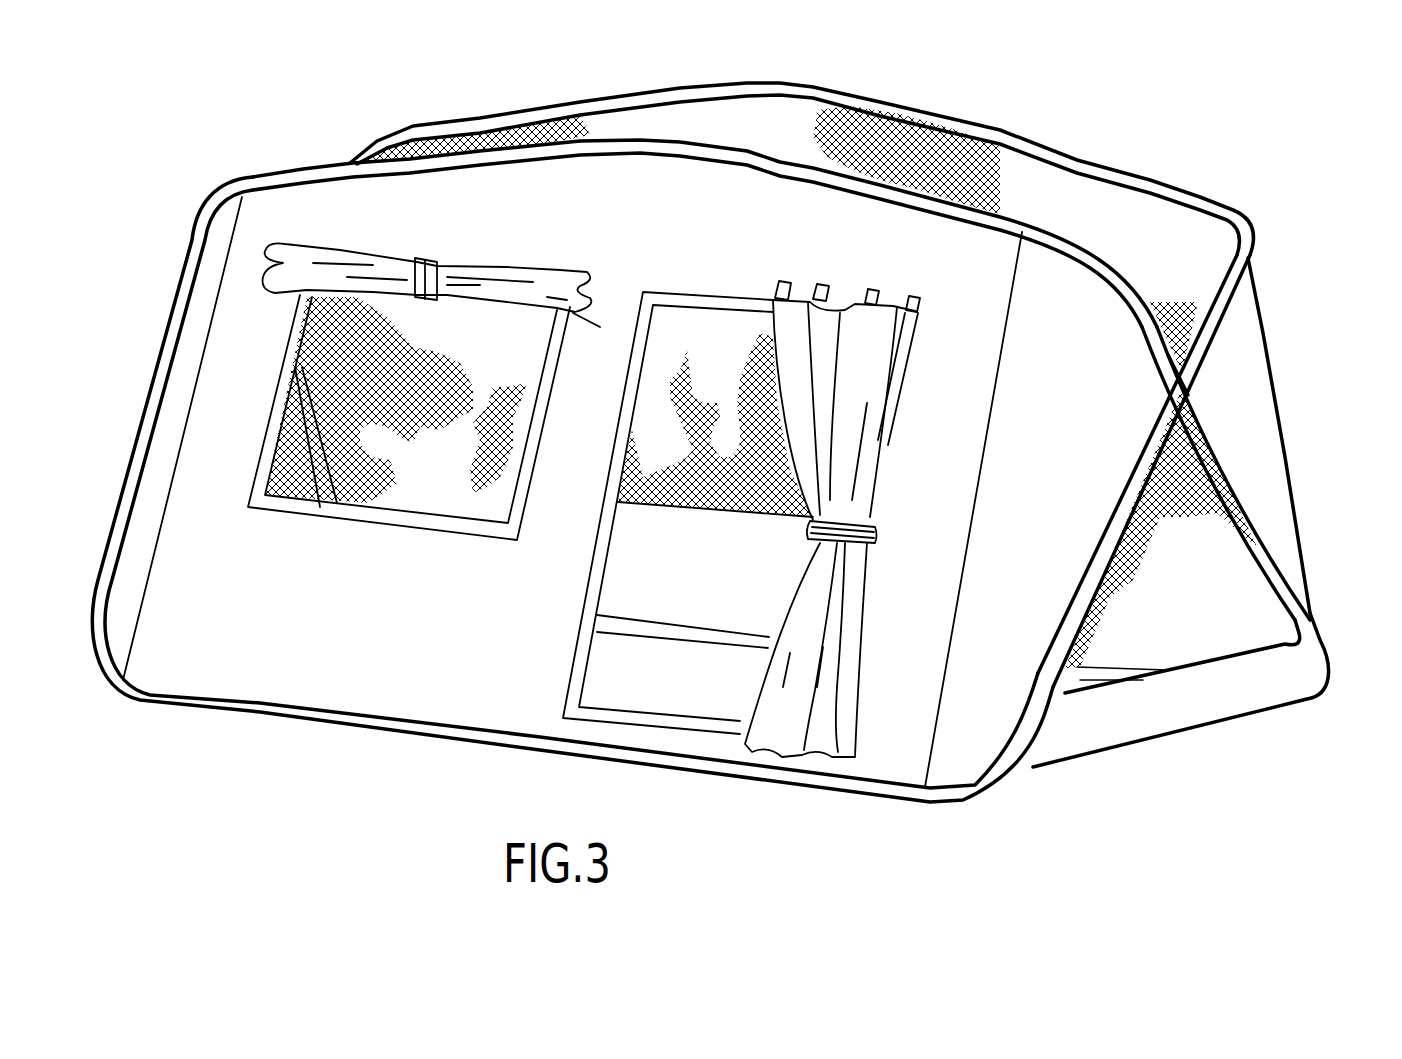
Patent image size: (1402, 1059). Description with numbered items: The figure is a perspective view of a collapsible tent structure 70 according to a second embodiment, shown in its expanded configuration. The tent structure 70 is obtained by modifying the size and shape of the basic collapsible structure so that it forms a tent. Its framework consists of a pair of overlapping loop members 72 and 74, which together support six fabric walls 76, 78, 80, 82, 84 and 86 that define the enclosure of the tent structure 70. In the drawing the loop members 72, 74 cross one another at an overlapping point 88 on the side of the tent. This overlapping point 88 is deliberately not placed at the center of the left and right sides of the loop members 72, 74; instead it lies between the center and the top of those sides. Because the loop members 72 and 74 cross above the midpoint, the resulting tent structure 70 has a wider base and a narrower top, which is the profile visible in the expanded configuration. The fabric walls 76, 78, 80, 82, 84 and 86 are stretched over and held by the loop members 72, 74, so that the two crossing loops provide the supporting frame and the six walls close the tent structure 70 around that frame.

The tent structure 70 is at (1067, 83).
The loop member 72 is at (1135, 318).
The loop member 74 is at (1131, 484).
The fabric wall 76 is at (1032, 595).
The fabric wall 78 is at (424, 622).
The fabric wall 80 is at (342, 157).
The fabric wall 82 is at (1270, 330).
The fabric wall 84 is at (1210, 721).
The fabric wall 86 is at (767, 130).
The overlapping point 88 is at (1163, 394).